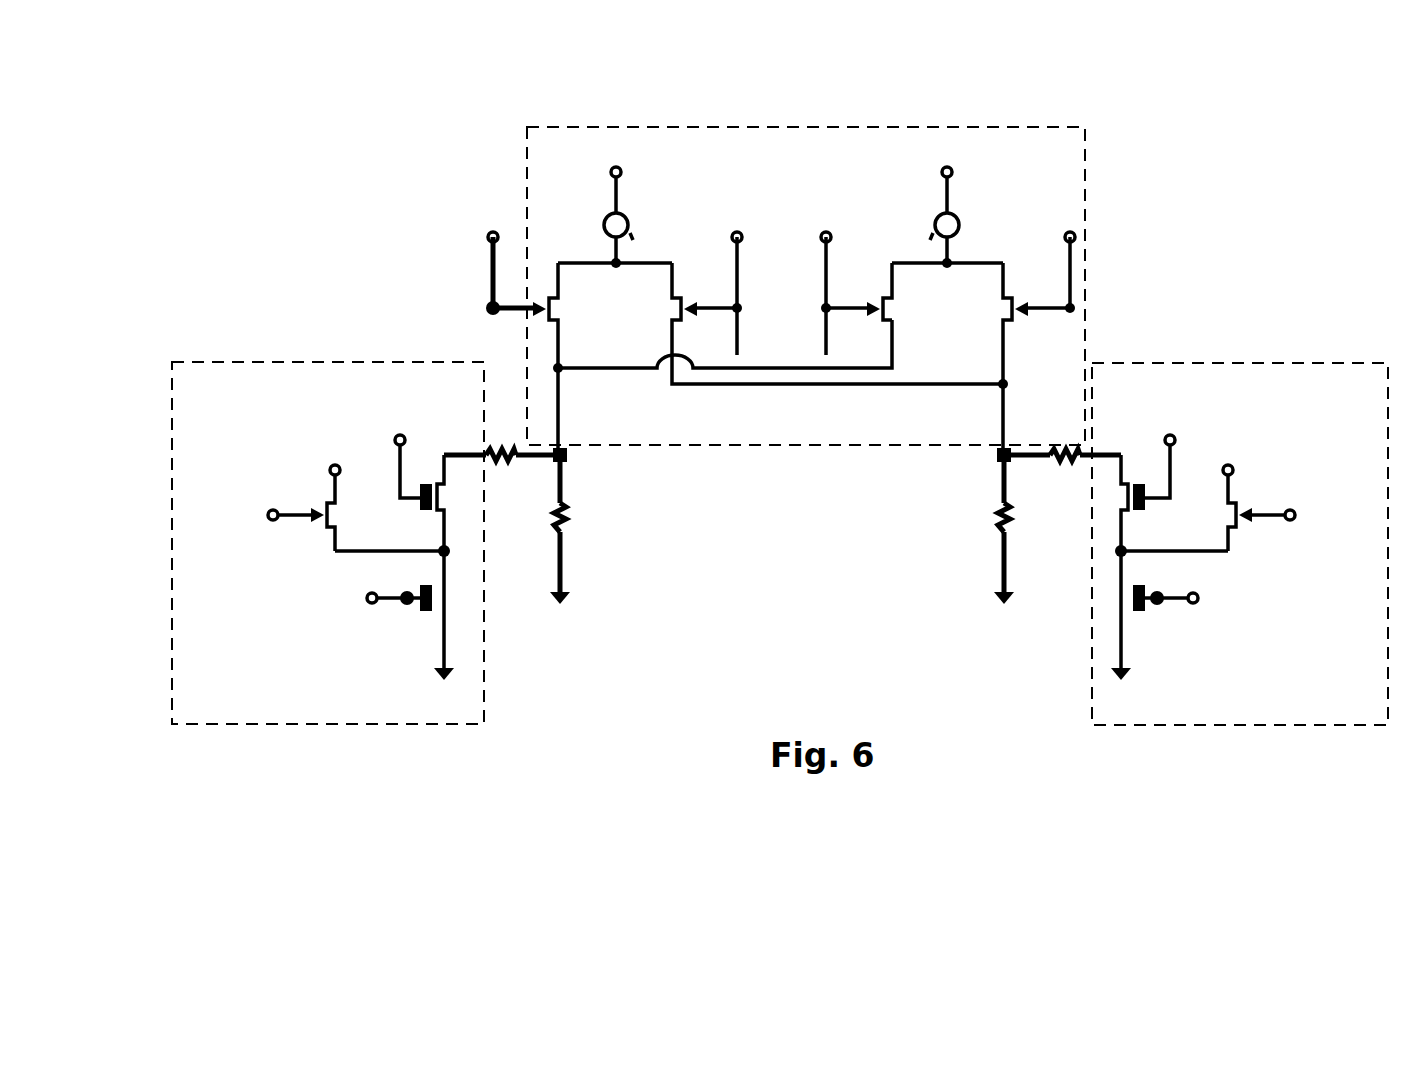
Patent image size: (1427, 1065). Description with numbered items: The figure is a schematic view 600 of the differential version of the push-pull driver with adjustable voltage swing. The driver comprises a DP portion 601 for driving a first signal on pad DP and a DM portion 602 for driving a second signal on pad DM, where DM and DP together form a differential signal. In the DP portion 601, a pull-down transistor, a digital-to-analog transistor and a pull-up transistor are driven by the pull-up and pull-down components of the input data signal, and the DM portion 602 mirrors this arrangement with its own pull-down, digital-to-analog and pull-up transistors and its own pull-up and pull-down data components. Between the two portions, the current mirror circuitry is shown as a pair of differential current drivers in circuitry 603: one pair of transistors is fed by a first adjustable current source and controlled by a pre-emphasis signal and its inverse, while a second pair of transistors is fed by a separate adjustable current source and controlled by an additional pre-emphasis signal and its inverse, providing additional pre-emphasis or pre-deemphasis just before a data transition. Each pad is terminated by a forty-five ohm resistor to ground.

The schematic view of the push-pull driver with adjustable voltage swing 600 is at (1255, 57).
The DP portion 601 is at (370, 362).
The DM portion 602 is at (1265, 363).
The circuitry 603 is at (548, 127).